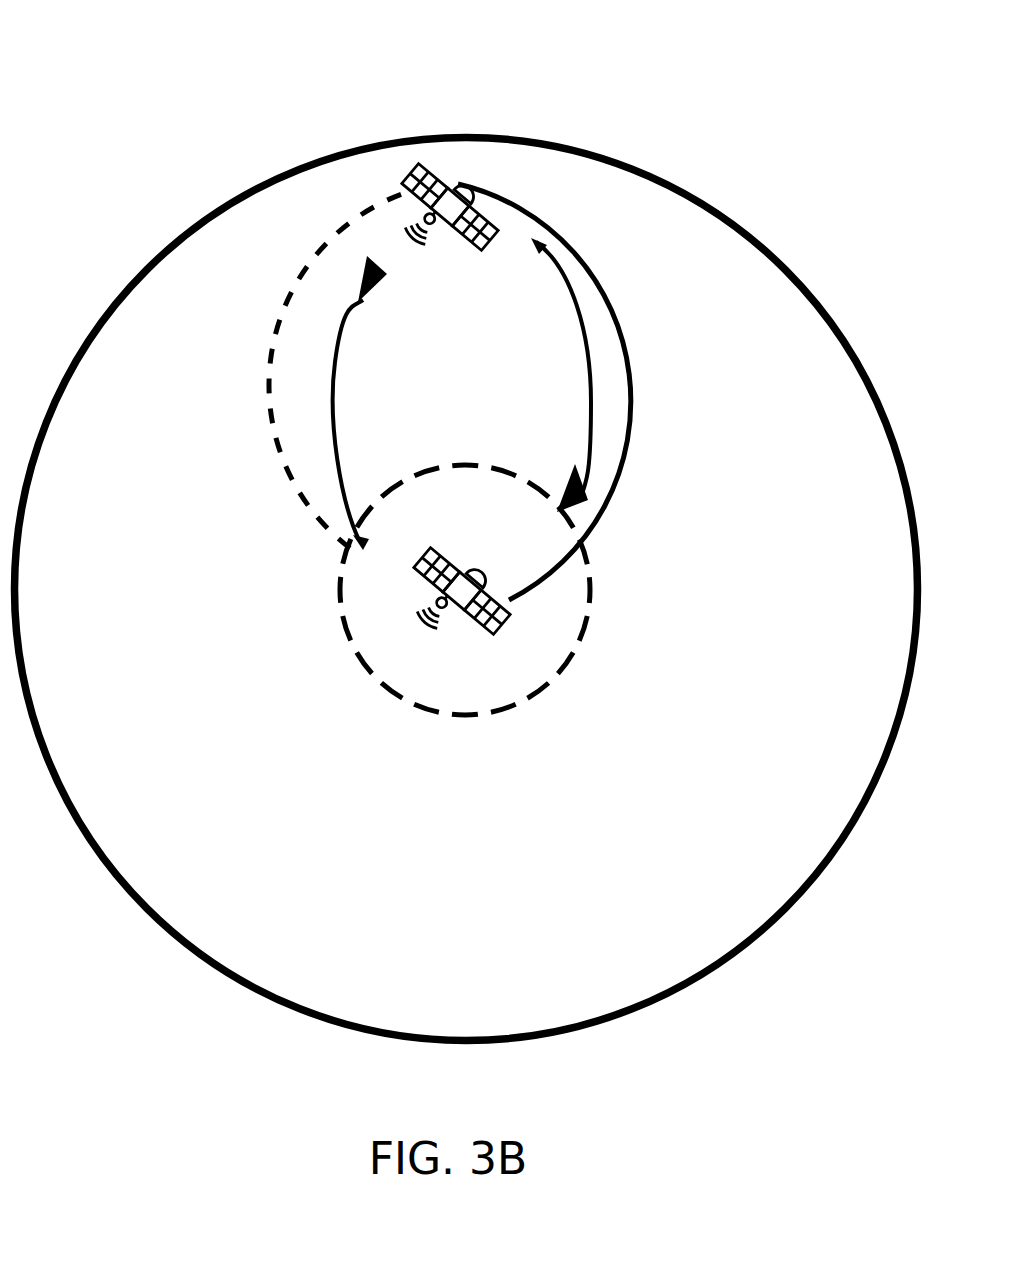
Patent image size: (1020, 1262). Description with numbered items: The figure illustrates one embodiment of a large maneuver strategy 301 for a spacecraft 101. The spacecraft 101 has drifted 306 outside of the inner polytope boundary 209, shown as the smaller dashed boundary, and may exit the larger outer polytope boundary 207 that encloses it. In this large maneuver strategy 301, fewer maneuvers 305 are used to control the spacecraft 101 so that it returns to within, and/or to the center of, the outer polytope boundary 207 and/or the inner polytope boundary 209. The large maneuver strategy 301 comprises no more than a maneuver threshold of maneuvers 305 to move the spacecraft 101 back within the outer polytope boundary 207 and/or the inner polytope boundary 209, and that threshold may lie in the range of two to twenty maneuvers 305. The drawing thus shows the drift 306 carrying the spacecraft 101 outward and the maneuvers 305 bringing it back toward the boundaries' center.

The large maneuver strategy 301 is at (139, 63).
The spacecraft 101 is at (455, 162).
The outer polytope boundary 207 is at (763, 249).
The inner polytope boundary 209 is at (338, 634).
The maneuvers 305 is at (628, 424).
The drift 306 is at (262, 396).